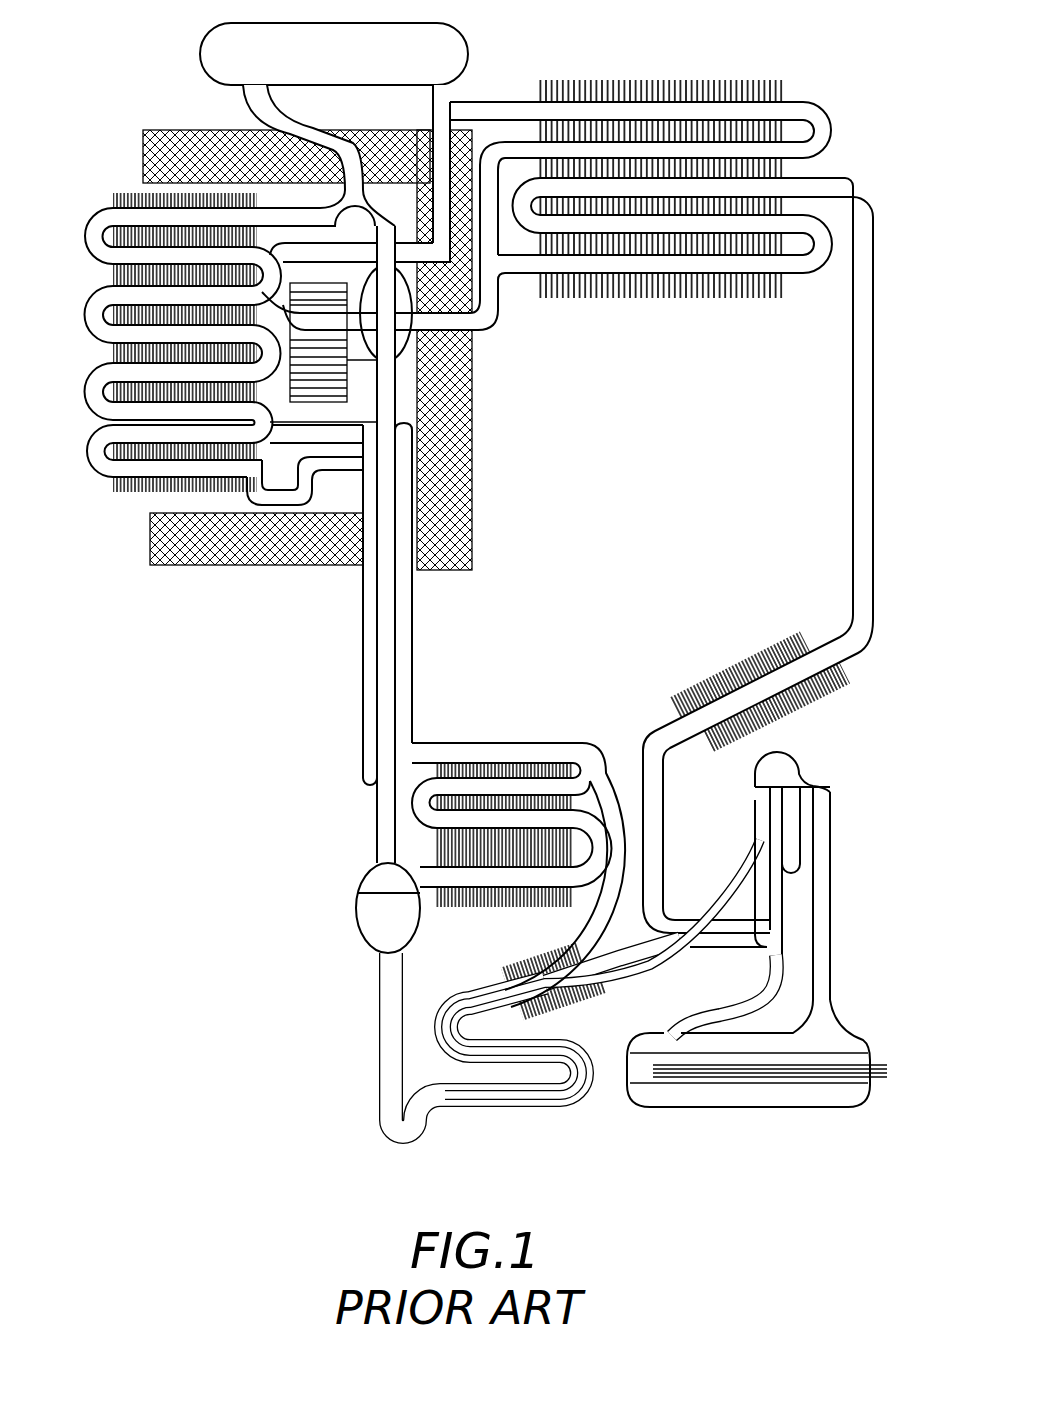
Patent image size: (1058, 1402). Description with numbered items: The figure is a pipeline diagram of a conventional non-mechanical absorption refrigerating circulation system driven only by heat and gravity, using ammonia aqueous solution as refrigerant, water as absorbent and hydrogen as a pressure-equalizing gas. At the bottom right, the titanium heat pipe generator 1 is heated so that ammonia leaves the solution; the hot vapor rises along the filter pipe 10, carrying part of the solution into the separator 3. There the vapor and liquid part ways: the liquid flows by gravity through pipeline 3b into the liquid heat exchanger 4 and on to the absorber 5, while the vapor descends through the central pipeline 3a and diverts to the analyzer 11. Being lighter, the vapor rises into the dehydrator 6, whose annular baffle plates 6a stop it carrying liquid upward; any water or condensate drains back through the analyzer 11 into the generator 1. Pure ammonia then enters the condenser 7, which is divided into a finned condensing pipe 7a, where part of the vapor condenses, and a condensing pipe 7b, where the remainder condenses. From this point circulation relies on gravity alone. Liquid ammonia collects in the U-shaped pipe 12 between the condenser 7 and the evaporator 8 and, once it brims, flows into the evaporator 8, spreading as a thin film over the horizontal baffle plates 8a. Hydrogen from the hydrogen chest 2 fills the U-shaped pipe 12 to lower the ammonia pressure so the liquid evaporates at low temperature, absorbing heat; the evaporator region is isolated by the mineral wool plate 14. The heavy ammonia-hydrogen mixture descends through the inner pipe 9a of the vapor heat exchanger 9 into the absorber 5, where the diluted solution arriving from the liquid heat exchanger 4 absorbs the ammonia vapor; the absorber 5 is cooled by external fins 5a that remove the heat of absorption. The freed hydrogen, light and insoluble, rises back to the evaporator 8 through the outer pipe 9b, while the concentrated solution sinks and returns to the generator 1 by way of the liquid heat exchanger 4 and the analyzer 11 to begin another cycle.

The titanium heat pipe generator 1 is at (860, 1030).
The hydrogen chest 2 is at (470, 45).
The separator 3 is at (775, 883).
The central pipeline 3a is at (785, 925).
The pipeline 3b is at (752, 860).
The liquid heat exchanger 4 is at (545, 1097).
The absorber 5 is at (440, 907).
The fins 5a is at (505, 895).
The dehydrator 6 is at (720, 640).
The annular baffle plates 6a is at (505, 977).
The condenser 7 is at (673, 490).
The condensing pipe 7a is at (866, 185).
The condensing pipe 7b is at (800, 100).
The evaporator 8 is at (210, 288).
The horizontal baffle plates 8a is at (110, 197).
The vapor heat exchanger 9 is at (408, 544).
The inner pipe 9a is at (377, 662).
The outer pipe 9b is at (363, 715).
The filter pipe 10 is at (832, 852).
The analyzer 11 is at (355, 365).
The U-shaped pipe 12 is at (393, 232).
The mineral wool plate 14 is at (235, 575).